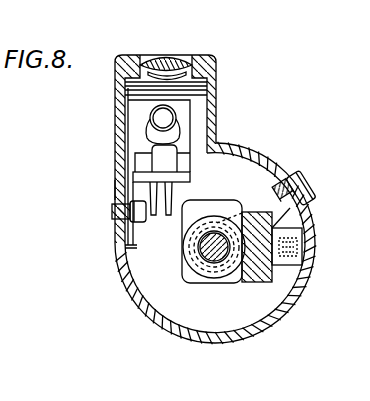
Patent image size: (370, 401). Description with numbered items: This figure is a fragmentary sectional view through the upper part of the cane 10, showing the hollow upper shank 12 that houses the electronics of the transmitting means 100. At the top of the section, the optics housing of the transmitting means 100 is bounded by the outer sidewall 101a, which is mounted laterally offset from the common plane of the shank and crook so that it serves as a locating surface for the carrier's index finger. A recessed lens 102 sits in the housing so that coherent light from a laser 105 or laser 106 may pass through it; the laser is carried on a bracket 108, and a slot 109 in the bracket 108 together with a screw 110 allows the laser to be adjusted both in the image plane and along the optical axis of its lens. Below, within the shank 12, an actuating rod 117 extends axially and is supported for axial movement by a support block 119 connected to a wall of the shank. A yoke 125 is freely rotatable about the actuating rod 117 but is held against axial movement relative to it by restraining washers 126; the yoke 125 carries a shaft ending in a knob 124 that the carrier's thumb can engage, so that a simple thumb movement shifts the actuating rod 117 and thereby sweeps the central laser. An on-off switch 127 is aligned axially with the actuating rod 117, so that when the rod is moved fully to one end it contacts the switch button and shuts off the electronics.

The cane 10 is at (313, 250).
The upper shank 12 is at (200, 343).
The transmitting means 100 is at (133, 53).
The outer sidewall 101a is at (116, 104).
The upper looking recessed lens 102 is at (172, 57).
The laser 105 is at (152, 157).
The laser 106 is at (150, 120).
The bracket 108 is at (192, 112).
The slot 109 is at (114, 187).
The screw 110 is at (112, 212).
The actuating rod 117 is at (203, 250).
The support block 119 is at (258, 282).
The knob 124 is at (309, 181).
The yoke 125 is at (242, 212).
The restraining washers 126 is at (193, 283).
The on-off switch 127 is at (200, 200).